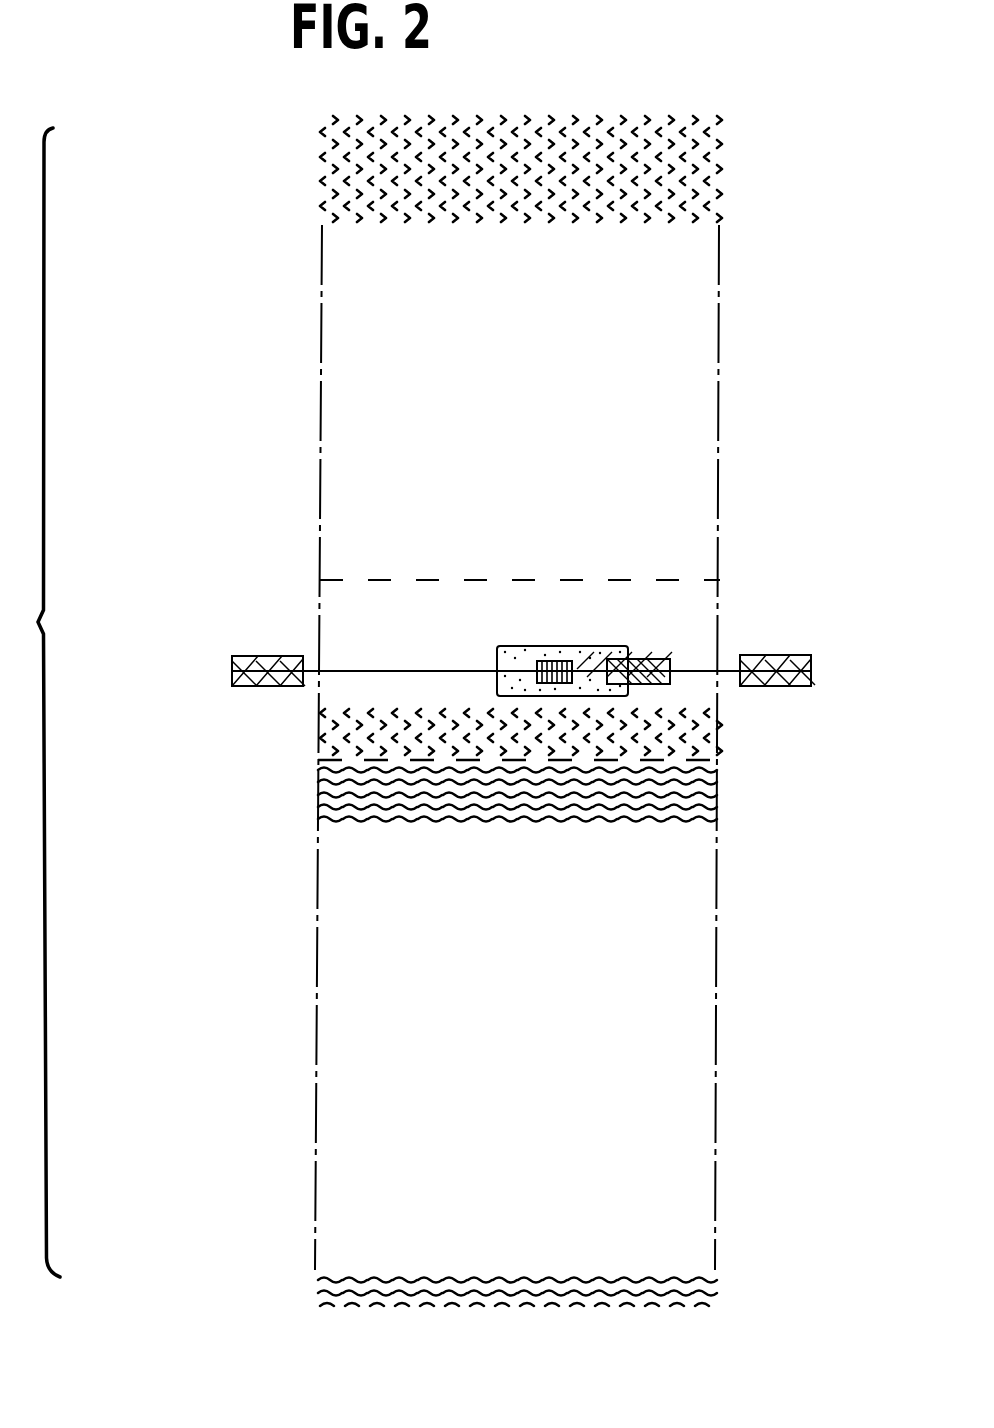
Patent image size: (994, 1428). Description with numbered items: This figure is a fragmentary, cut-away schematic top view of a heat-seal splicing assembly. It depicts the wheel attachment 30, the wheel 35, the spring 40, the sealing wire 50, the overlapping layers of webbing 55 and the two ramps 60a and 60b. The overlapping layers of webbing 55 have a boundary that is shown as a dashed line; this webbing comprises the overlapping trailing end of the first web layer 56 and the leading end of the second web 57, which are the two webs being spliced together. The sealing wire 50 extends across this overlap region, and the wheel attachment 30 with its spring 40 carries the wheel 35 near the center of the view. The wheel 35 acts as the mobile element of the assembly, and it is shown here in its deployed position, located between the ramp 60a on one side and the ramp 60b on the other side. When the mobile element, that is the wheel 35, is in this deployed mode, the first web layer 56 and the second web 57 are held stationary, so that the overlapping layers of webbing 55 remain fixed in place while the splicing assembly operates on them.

The wheel attachment 30 is at (605, 648).
The wheel 35 is at (652, 684).
The spring 40 is at (537, 668).
The sealing wire 50 is at (378, 671).
The overlapping layers of webbing 55 is at (342, 727).
The first web layer 56 is at (348, 178).
The second web 57 is at (368, 823).
The ramp 60a is at (232, 671).
The ramp 60b is at (790, 655).